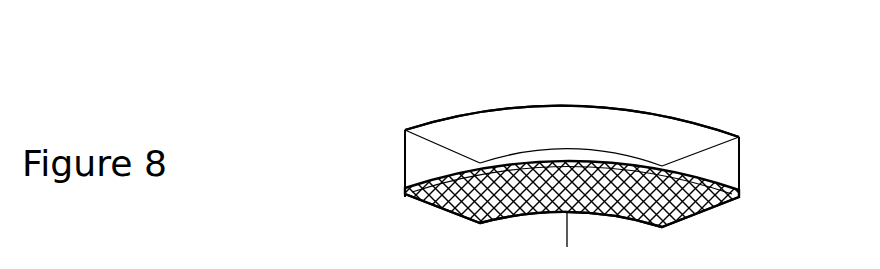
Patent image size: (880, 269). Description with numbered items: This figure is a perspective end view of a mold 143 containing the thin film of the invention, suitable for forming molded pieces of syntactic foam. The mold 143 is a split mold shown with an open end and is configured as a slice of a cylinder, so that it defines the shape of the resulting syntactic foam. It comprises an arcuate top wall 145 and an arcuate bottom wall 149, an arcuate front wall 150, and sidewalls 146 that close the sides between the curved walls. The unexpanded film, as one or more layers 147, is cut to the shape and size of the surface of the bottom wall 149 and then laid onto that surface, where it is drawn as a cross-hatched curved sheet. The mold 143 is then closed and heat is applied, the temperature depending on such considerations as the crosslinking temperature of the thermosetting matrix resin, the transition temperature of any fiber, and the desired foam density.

The mold 143 is at (668, 88).
The arcuate top wall 145 is at (488, 113).
The sidewalls 146 is at (739, 160).
The layers of unexpanded film 147 is at (739, 185).
The arcuate bottom wall 149 is at (410, 199).
The arcuate front wall 150 is at (567, 130).